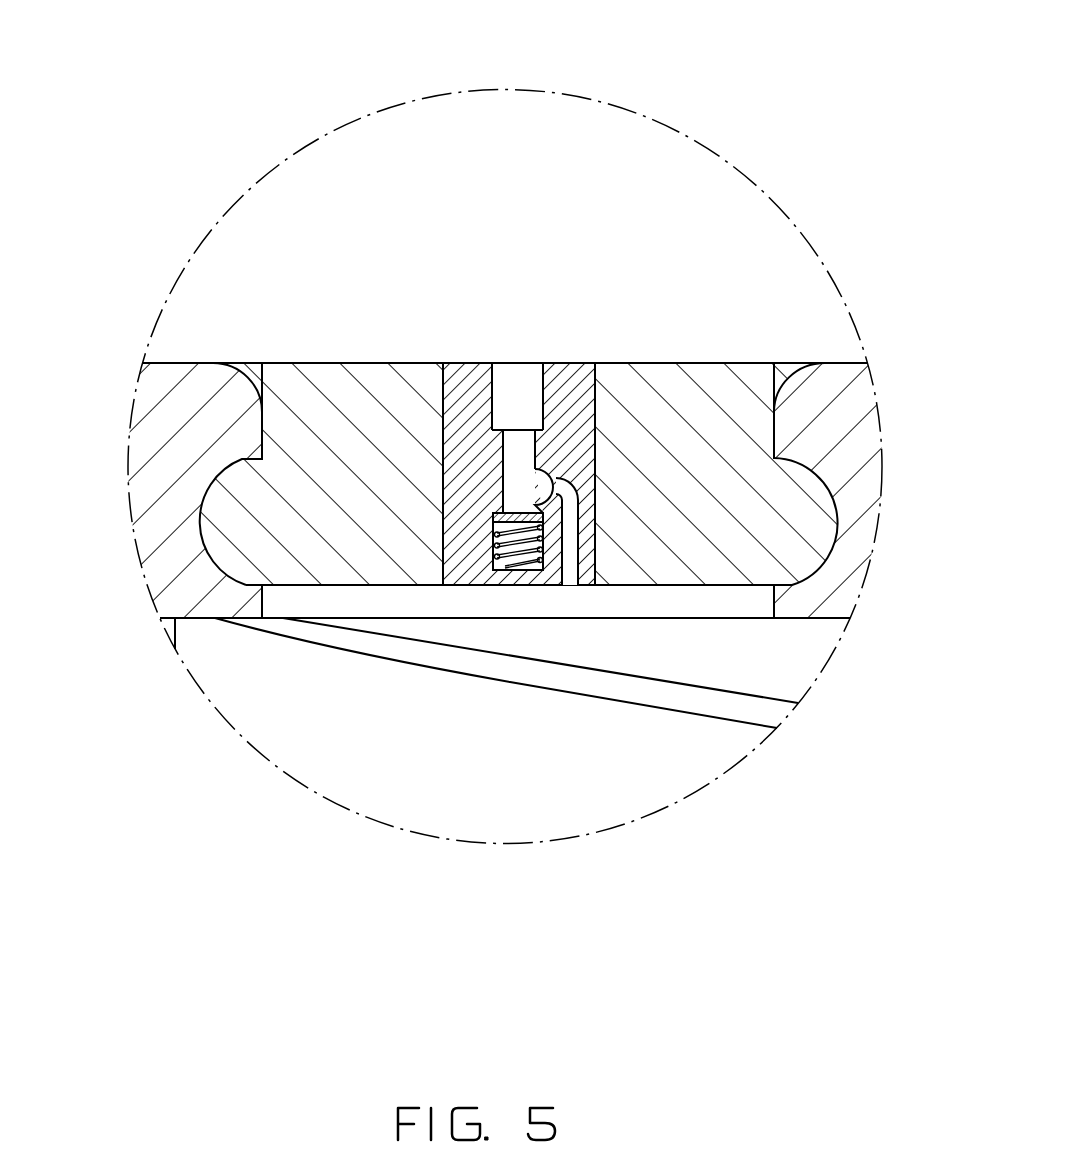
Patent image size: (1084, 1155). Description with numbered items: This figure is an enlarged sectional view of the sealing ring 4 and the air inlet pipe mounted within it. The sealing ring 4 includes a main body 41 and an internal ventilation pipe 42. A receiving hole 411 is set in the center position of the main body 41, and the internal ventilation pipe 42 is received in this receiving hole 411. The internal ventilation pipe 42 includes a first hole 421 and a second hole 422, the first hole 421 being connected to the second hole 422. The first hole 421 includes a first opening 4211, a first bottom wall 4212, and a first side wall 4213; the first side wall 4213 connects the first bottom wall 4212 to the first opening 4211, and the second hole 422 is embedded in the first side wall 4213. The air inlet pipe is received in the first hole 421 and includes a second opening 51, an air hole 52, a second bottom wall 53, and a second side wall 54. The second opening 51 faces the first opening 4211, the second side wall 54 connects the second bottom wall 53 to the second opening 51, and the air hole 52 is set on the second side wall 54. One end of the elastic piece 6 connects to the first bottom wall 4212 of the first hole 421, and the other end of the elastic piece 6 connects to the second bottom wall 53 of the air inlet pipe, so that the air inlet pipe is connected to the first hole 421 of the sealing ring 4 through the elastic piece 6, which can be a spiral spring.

The sealing ring 4 is at (475, 454).
The main body 41 is at (330, 428).
The internal ventilation pipe 42 is at (500, 445).
The receiving hole 411 is at (443, 364).
The first hole 421 is at (543, 363).
The first opening 4211 is at (528, 388).
The first bottom wall 4212 is at (533, 570).
The first side wall 4213 is at (493, 495).
The second hole 422 is at (570, 540).
The second opening 51 is at (517, 428).
The air hole 52 is at (547, 472).
The second bottom wall 53 is at (543, 521).
The second side wall 54 is at (467, 468).
The elastic piece 6 is at (517, 560).